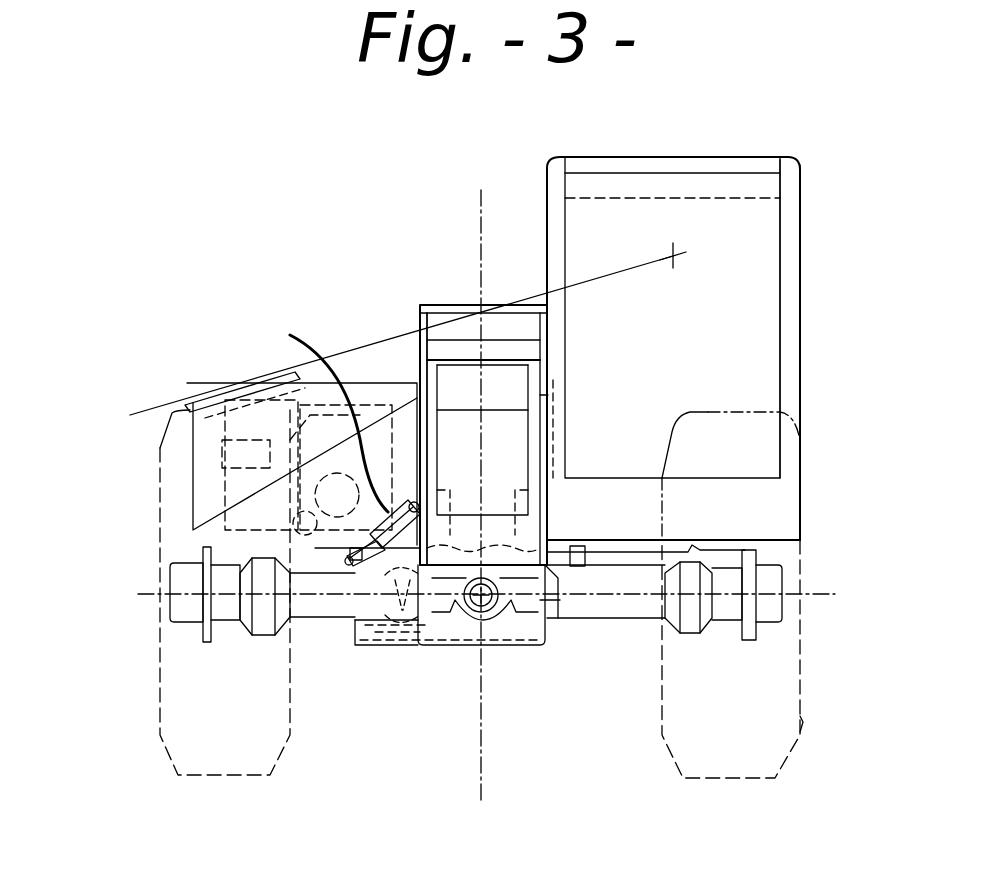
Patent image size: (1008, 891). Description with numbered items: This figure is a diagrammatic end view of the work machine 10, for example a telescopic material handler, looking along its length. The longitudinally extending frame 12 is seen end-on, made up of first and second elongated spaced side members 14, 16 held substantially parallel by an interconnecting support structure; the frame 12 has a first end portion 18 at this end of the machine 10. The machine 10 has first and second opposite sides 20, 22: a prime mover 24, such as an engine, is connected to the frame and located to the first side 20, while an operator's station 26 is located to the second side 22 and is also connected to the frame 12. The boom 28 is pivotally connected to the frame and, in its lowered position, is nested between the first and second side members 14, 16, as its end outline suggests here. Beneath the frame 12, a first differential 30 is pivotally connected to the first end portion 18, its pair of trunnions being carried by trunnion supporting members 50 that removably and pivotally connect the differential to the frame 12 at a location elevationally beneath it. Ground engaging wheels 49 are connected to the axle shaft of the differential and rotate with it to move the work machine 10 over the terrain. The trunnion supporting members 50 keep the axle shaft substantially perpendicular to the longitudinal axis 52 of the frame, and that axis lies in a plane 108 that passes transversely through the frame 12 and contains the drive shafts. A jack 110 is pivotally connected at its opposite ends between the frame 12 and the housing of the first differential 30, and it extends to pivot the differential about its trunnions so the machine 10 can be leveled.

The work machine 10 is at (658, 141).
The frame 12 is at (418, 322).
The first side member 14 is at (423, 355).
The second side member 16 is at (560, 352).
The first end portion 18 is at (560, 616).
The first side 20 is at (158, 470).
The second side 22 is at (748, 505).
The prime mover 24 is at (238, 391).
The operator's station 26 is at (805, 288).
The boom 28 is at (548, 405).
The first differential 30 is at (520, 628).
The ground engaging wheels 49 is at (150, 705).
The trunnion supporting members 50 is at (430, 610).
The longitudinal axis 52 is at (476, 612).
The plane 108 is at (150, 592).
The jack 110 is at (326, 445).